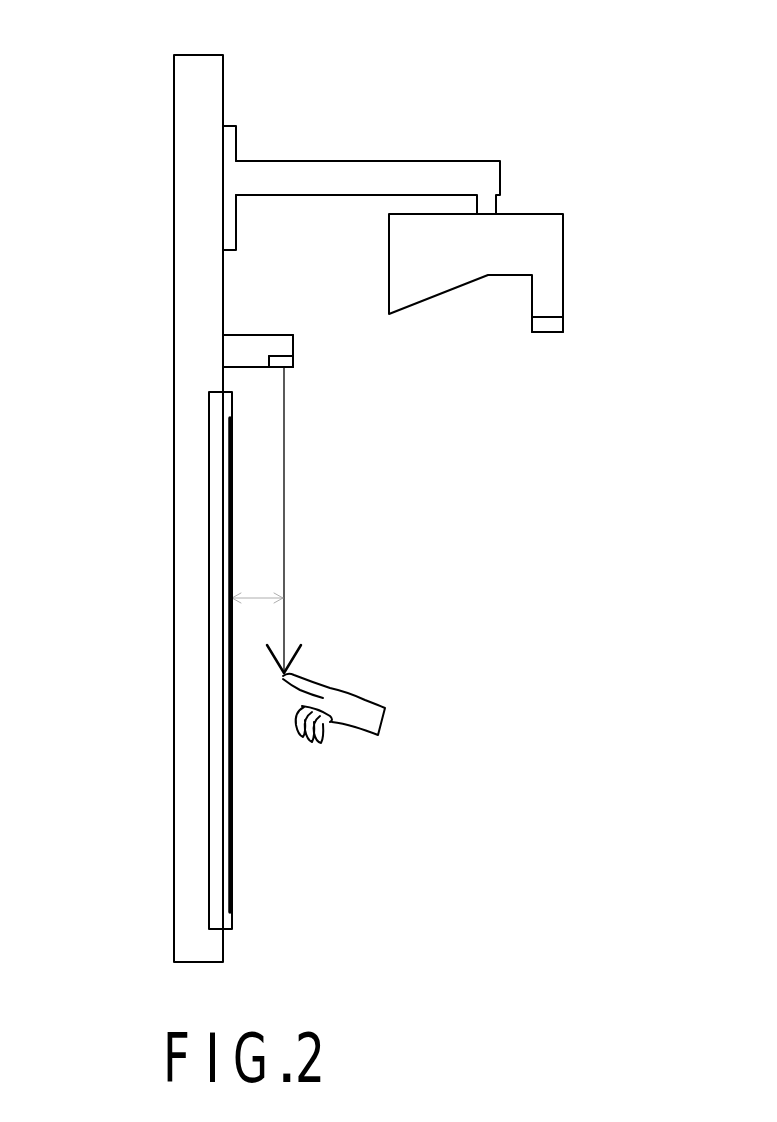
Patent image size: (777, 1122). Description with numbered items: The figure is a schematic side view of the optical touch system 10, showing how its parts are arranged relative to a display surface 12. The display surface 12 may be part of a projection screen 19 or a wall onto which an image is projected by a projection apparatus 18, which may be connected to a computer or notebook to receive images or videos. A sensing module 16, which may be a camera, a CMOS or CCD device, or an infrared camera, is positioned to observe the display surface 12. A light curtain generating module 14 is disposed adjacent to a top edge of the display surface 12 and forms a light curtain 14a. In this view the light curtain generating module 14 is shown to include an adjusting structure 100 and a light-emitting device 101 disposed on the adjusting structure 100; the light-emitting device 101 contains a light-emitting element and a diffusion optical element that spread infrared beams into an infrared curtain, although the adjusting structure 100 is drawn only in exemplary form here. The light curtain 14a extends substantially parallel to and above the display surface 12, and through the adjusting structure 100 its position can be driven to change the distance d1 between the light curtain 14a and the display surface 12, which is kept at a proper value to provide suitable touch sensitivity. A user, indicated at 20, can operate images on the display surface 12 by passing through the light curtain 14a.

The optical touch system 10 is at (70, 63).
The projection screen 19 is at (195, 185).
The sensing module 16 is at (548, 286).
The projection apparatus 18 is at (548, 326).
The light curtain generating module 14 is at (70, 283).
The adjusting structure 100 is at (240, 348).
The light-emitting device 101 is at (275, 361).
The light curtain 14a is at (231, 518).
The distance d1 is at (231, 622).
The display surface 12 is at (223, 717).
The user finger 20 is at (385, 720).